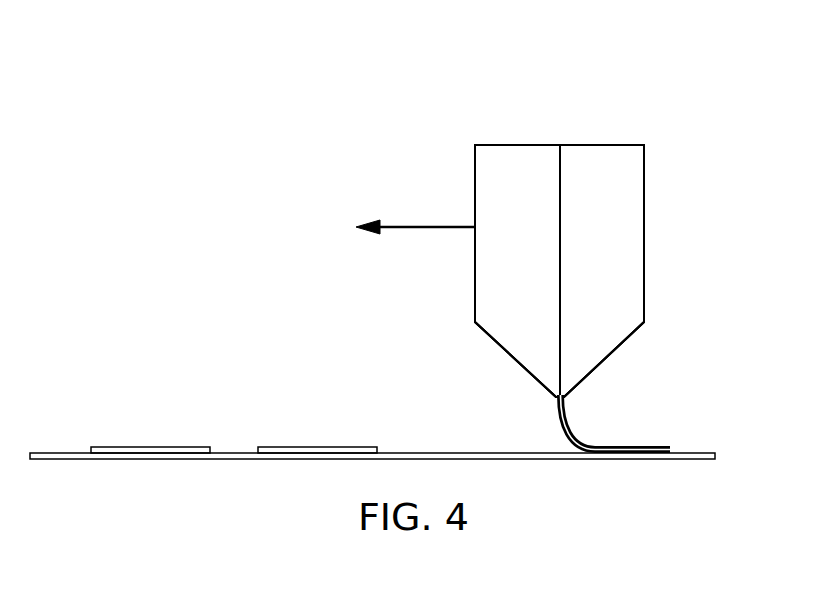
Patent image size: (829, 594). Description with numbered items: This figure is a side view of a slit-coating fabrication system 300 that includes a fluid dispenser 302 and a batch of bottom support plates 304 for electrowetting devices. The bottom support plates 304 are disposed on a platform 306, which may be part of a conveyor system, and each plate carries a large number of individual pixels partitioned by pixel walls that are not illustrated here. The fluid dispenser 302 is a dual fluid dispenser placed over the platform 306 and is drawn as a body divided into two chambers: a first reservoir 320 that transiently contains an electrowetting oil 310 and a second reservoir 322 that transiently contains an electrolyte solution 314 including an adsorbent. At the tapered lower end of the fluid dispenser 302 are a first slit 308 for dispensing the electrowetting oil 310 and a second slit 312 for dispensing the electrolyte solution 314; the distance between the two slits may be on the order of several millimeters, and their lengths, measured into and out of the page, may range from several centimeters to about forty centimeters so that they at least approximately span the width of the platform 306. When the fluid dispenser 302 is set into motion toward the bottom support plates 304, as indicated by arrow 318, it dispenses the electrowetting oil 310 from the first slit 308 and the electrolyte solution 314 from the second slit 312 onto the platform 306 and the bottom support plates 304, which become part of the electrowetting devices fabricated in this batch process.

The slit-coating fabrication system 300 is at (640, 76).
The fluid dispenser 302 is at (646, 154).
The bottom support plates 304 is at (163, 447).
The platform 306 is at (645, 460).
The first slit 308 is at (555, 393).
The electrowetting oil 310 is at (560, 428).
The second slit 312 is at (565, 393).
The electrolyte solution 314 is at (580, 437).
The arrow 318 is at (428, 226).
The first reservoir 320 is at (517, 271).
The second reservoir 322 is at (602, 271).